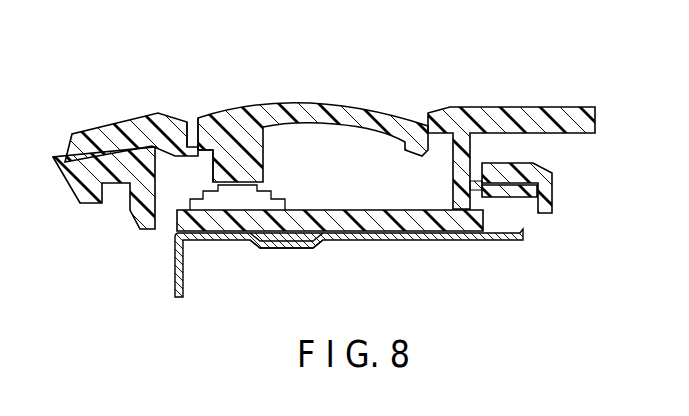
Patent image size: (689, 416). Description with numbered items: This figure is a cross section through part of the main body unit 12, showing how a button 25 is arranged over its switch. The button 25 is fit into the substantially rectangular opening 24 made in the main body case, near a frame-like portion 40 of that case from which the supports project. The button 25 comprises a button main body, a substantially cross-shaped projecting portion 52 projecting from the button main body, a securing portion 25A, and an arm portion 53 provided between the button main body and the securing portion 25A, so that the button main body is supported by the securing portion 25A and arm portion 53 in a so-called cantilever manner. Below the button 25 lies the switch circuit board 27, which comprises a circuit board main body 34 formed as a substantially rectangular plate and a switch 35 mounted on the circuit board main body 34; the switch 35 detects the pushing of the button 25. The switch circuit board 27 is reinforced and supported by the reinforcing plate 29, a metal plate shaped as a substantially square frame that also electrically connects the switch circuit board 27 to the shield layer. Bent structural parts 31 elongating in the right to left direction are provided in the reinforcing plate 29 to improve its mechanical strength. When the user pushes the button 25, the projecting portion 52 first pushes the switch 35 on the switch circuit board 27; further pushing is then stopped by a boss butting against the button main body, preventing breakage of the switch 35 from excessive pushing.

The main body unit 12 is at (120, 123).
The frame-like portion 40 is at (141, 143).
The opening 24 is at (187, 112).
The button 25 is at (357, 106).
The projecting portion 52 is at (222, 167).
The switch 35 is at (273, 195).
The circuit board main body 34 is at (407, 222).
The reinforcing plate 29 is at (461, 241).
The bent structural part 31 is at (288, 249).
The switch circuit board 27 is at (432, 208).
The arm portion 53 is at (481, 172).
The securing portion 25A is at (513, 198).